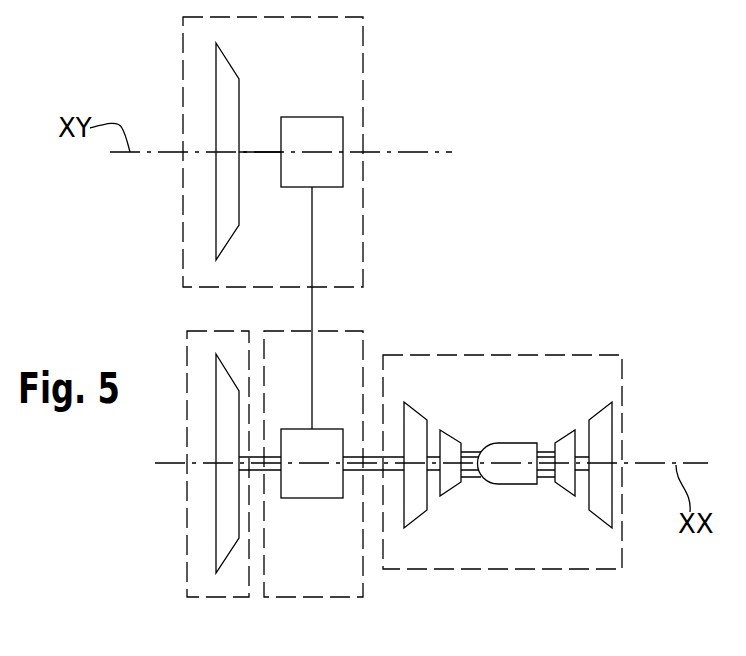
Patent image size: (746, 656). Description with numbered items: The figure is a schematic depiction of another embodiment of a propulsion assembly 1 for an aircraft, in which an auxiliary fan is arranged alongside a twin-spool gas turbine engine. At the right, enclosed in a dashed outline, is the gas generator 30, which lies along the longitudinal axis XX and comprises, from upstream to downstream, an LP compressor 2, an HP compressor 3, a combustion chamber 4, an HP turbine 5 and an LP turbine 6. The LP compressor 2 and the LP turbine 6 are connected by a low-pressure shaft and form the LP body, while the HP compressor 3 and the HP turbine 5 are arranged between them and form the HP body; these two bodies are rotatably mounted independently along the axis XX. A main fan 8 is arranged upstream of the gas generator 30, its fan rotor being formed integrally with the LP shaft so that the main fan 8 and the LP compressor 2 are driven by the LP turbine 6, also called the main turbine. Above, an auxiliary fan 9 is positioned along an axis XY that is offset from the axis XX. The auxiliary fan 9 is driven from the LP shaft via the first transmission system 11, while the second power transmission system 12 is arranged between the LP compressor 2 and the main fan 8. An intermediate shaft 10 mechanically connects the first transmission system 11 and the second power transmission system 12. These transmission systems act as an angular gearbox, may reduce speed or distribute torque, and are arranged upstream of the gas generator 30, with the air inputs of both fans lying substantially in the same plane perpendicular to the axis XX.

The propulsion assembly 1 is at (559, 173).
The low-pressure compressor 2 is at (415, 420).
The high-pressure compressor 3 is at (451, 448).
The combustion chamber 4 is at (509, 452).
The high-pressure turbine 5 is at (567, 447).
The low-pressure turbine 6 is at (601, 423).
The main fan 8 is at (222, 528).
The auxiliary fan 9 is at (226, 207).
The intermediate shaft 10 is at (312, 308).
The first transmission system 11 is at (331, 122).
The second power transmission system 12 is at (295, 492).
The gas generator 30 is at (511, 533).